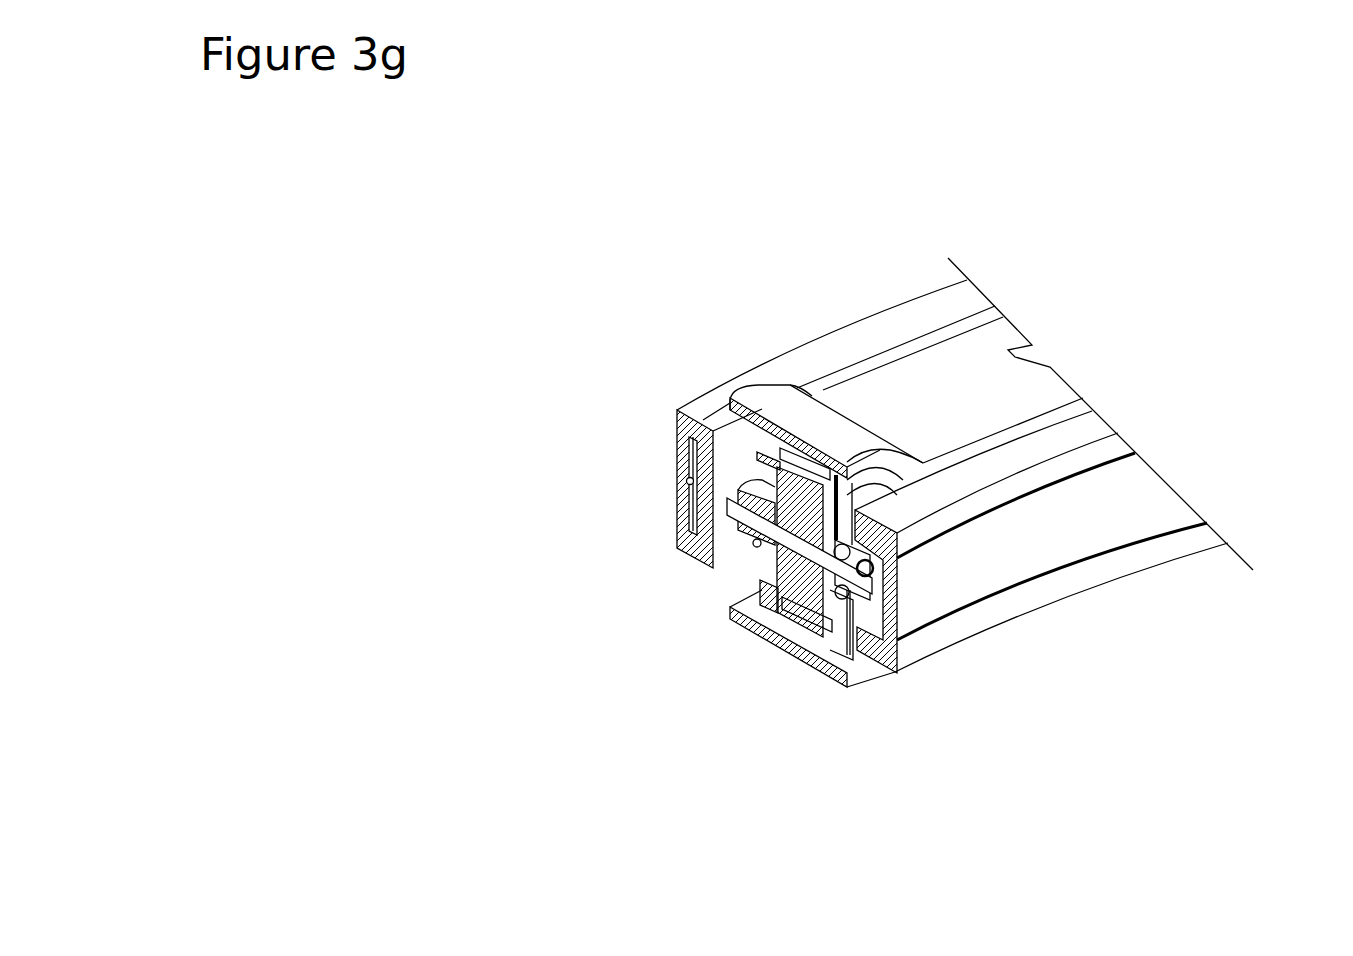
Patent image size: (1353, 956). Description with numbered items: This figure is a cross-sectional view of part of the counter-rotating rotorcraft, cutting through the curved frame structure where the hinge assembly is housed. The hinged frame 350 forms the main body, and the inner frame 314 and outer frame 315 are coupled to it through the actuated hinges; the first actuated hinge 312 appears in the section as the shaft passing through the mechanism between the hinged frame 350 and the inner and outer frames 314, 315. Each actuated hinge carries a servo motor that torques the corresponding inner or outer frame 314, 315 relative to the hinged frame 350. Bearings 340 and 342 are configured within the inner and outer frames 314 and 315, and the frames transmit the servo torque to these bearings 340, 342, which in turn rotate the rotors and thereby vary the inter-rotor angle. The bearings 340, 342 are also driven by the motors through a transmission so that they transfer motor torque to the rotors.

The first actuated hinge 312 is at (707, 563).
The inner frame 314 is at (972, 477).
The outer frame 315 is at (820, 348).
The bearing 340 is at (882, 597).
The bearing 342 is at (690, 483).
The hinged frame 350 is at (960, 383).